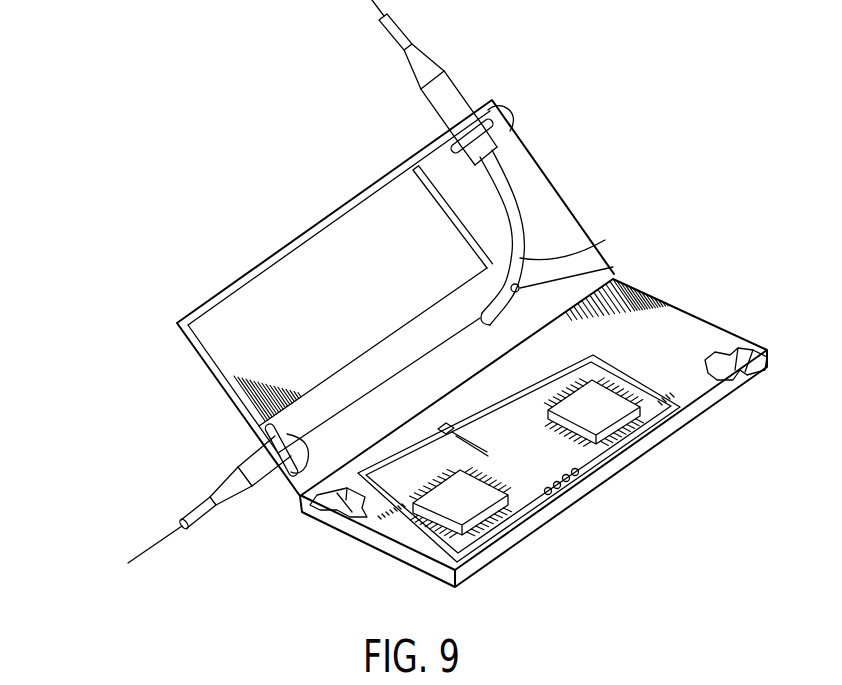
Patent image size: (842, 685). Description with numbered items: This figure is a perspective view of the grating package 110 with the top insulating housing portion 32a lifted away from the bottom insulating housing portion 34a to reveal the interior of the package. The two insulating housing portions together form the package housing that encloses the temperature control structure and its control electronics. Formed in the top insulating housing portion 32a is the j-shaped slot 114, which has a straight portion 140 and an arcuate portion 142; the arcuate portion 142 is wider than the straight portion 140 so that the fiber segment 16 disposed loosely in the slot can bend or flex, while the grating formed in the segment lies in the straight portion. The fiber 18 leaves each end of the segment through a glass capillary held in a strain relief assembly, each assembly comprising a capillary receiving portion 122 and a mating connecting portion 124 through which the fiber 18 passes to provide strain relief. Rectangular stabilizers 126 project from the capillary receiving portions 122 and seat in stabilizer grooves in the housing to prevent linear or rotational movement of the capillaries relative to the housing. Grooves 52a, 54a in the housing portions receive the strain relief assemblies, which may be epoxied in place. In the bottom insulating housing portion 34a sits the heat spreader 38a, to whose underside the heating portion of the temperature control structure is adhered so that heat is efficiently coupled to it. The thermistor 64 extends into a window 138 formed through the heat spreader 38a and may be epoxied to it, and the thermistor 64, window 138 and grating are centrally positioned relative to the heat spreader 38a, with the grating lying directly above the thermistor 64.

The grating package 110 is at (714, 177).
The fiber segment 16 is at (507, 193).
The fiber 18 is at (153, 547).
The top insulating housing portion 32a is at (175, 323).
The bottom insulating housing portion 34a is at (627, 467).
The heat spreader 38a is at (527, 377).
The groove 52a is at (323, 516).
The groove 54a is at (744, 383).
The thermistor 64 is at (442, 424).
The j-shaped slot 114 is at (614, 262).
The capillary receiving portion 122 is at (492, 118).
The connecting portion 124 is at (435, 53).
The rectangular stabilizer 126 is at (513, 128).
The window 138 is at (476, 436).
The straight portion 140 is at (382, 384).
The arcuate portion 142 is at (605, 240).